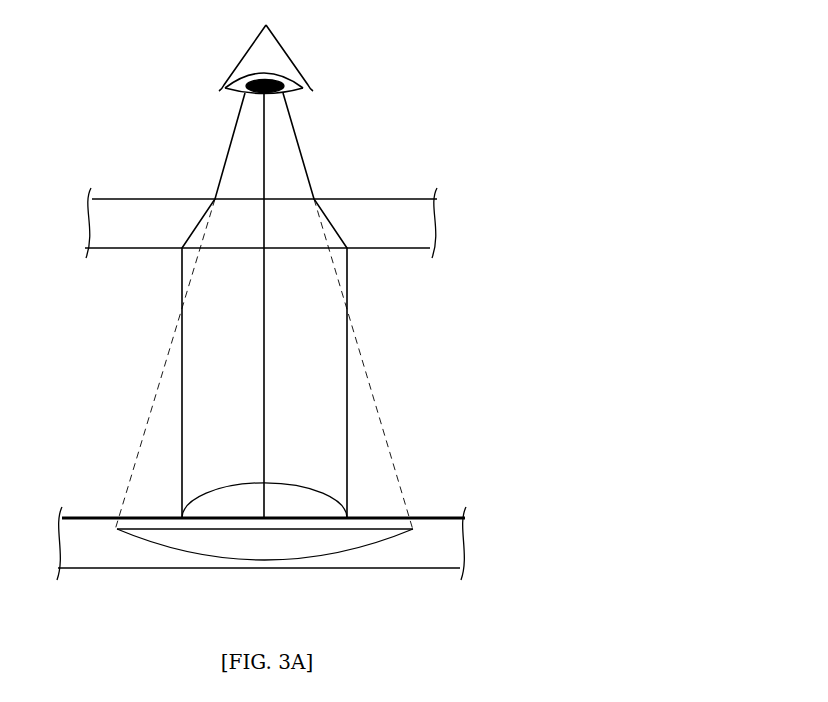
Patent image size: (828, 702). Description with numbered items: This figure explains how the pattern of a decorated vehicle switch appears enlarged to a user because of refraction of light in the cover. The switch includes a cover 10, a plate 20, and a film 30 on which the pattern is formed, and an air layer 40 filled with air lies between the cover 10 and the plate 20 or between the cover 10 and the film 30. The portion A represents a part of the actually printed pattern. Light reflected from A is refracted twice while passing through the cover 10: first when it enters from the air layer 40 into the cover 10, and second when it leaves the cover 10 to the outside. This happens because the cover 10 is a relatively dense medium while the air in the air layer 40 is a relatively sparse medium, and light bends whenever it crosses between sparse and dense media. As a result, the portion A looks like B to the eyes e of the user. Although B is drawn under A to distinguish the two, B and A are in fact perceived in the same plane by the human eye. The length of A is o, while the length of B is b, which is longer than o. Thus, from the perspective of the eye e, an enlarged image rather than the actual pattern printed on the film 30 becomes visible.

The eyes of the user e is at (278, 50).
The cover 10 is at (388, 215).
The air layer 40 is at (410, 342).
The portion of the actually printed pattern A is at (290, 518).
The length of A o is at (264, 482).
The film 30 is at (447, 512).
The enlarged image of A B is at (184, 529).
The length of B b is at (263, 574).
The plate 20 is at (398, 553).